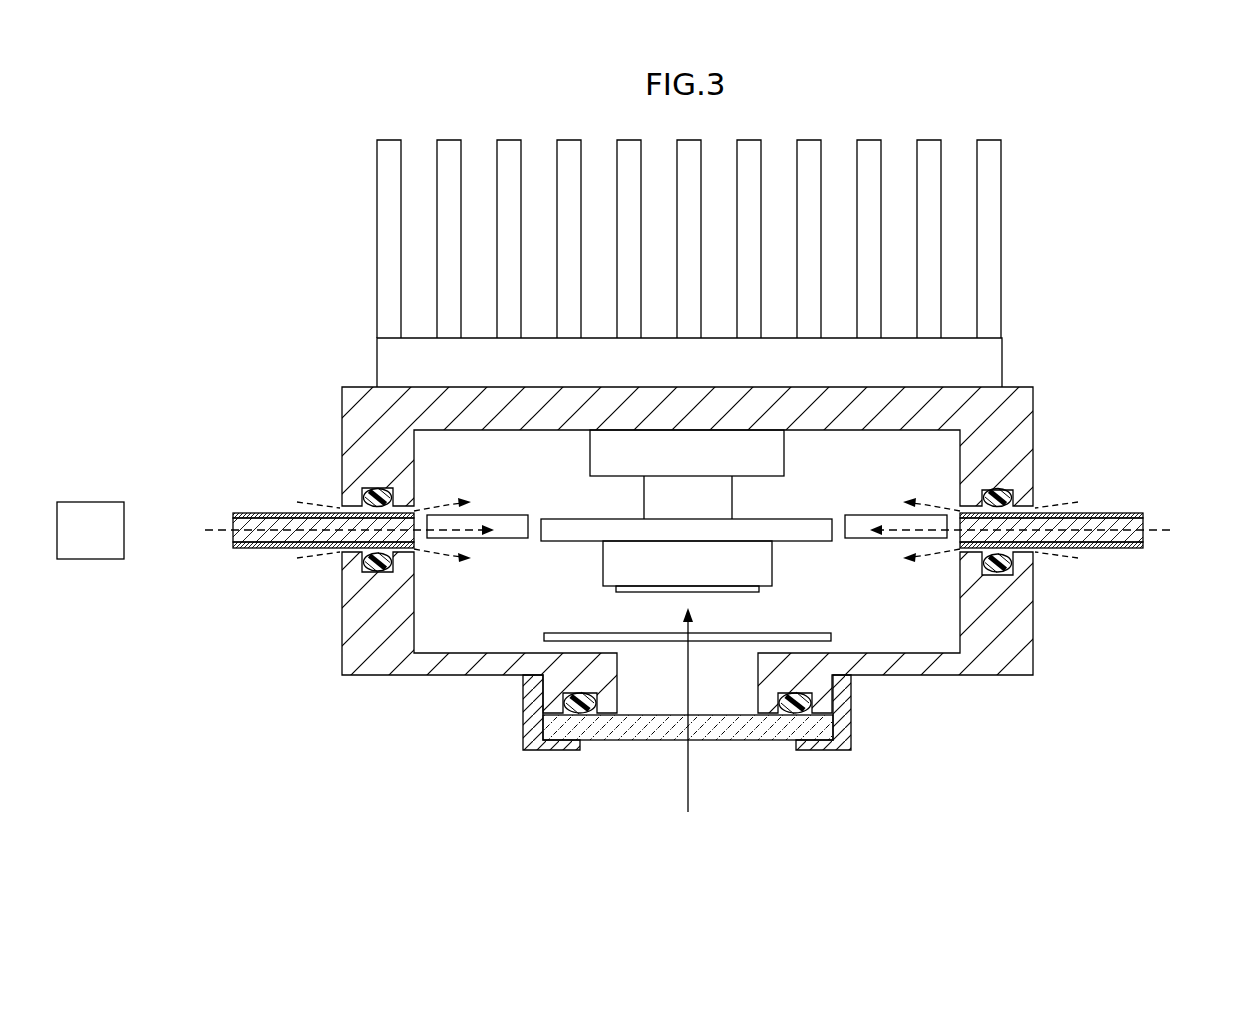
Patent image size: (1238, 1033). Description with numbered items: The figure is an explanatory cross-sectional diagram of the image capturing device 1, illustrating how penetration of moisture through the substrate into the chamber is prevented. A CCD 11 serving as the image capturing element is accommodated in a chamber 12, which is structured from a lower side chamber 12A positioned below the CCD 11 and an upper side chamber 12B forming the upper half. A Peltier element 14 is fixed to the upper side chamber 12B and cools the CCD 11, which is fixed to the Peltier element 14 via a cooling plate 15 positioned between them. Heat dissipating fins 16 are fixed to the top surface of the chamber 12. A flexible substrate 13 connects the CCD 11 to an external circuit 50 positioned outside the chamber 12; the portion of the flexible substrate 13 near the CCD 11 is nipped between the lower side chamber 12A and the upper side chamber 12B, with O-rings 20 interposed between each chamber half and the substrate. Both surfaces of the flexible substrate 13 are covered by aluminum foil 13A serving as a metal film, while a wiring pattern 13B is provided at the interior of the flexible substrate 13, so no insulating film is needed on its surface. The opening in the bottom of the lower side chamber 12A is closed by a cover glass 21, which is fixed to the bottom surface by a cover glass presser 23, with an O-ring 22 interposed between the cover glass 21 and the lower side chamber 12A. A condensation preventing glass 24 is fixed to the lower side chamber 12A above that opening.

The image capturing device 1 is at (1075, 401).
The CCD 11 is at (765, 568).
The chamber 12 is at (1046, 440).
The lower side chamber 12A is at (1020, 630).
The upper side chamber 12B is at (1003, 405).
The flexible substrate 13 is at (288, 553).
The aluminum foil 13A is at (270, 512).
The wiring pattern 13B is at (233, 520).
The Peltier element 14 is at (783, 453).
The cooling plate 15 is at (793, 523).
The heat dissipating fins 16 is at (985, 236).
The O-rings 20 is at (1003, 498).
The cover glass 21 is at (618, 741).
The O-ring 22 is at (790, 714).
The cover glass presser 23 is at (853, 722).
The condensation preventing glass 24 is at (803, 632).
The external circuit 50 is at (90, 560).